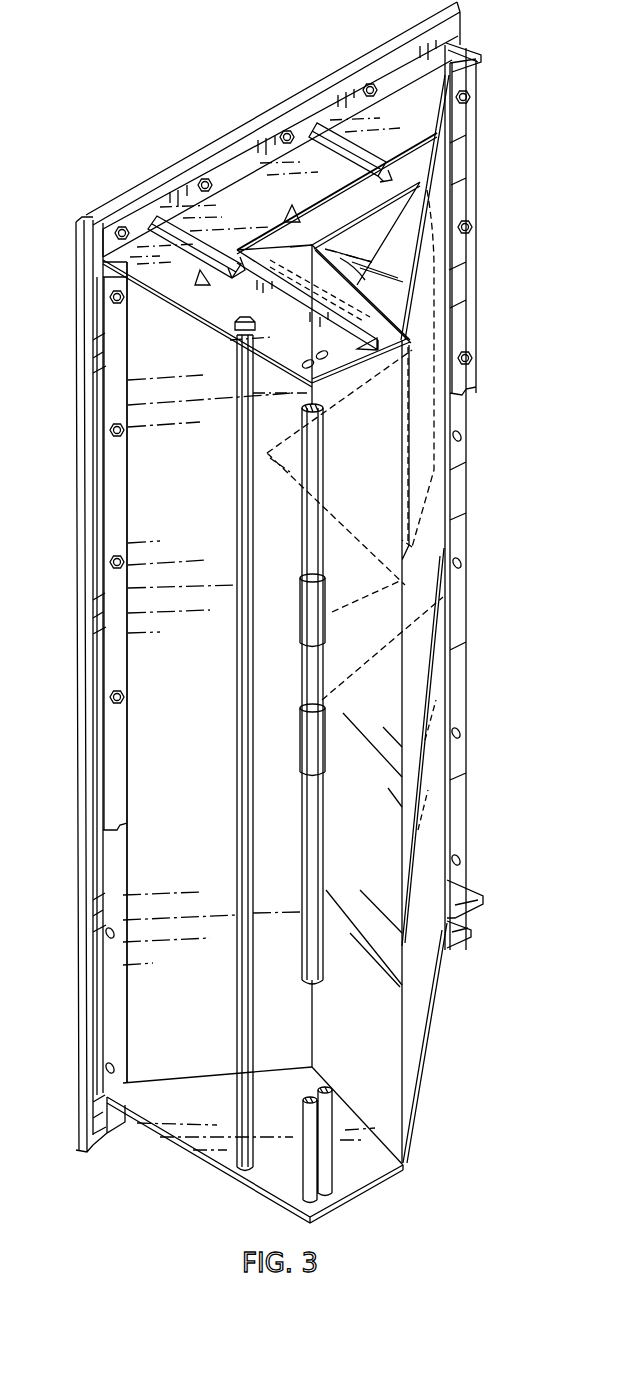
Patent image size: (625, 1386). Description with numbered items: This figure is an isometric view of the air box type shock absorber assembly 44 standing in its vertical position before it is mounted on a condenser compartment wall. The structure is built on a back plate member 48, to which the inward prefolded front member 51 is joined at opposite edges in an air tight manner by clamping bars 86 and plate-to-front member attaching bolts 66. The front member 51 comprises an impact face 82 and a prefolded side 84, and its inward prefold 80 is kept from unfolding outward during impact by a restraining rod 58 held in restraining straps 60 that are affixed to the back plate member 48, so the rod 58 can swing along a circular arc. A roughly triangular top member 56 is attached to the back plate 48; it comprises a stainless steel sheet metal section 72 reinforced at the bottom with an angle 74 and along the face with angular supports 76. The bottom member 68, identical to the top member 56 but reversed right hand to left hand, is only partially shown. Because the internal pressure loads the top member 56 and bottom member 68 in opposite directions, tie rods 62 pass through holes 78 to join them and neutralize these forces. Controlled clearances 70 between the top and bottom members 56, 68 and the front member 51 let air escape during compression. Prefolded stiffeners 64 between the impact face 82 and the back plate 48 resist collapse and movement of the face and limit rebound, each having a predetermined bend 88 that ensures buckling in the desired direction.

The shock absorber assembly 44 is at (509, 711).
The back plate member 48 is at (76, 290).
The inward prefolded front member 51 is at (442, 711).
The top member 56 is at (418, 194).
The restraining rod 58 is at (318, 845).
The restraining strap 60 is at (300, 630).
The tie rods 62 is at (250, 1084).
The prefolded stiffener 64 is at (359, 237).
The plate-to-front member attaching bolts 66 is at (471, 225).
The bottom member 68 is at (360, 1182).
The controlled clearances 70 is at (120, 1087).
The sheet metal section 72 is at (205, 312).
The angle 74 is at (470, 50).
The angular supports 76 is at (245, 182).
The holes 78 is at (316, 368).
The inward prefold 80 is at (313, 1030).
The impact face 82 is at (440, 808).
The prefolded side 84 is at (173, 851).
The clamping bar 86 is at (118, 775).
The predetermined bend 88 is at (360, 282).